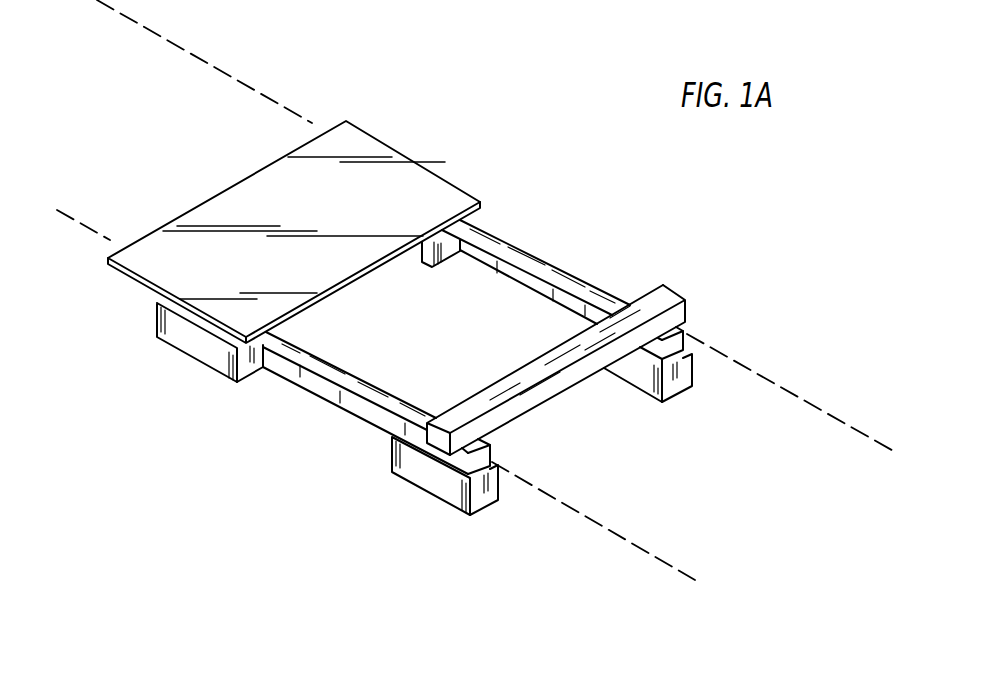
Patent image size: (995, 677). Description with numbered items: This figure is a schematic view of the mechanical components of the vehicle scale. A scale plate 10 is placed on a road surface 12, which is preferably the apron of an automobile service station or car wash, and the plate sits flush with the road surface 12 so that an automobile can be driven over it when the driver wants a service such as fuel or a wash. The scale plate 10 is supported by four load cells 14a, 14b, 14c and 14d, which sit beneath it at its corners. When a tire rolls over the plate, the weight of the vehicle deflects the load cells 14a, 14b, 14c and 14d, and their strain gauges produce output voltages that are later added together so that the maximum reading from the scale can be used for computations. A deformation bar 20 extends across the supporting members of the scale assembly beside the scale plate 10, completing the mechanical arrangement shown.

The scale plate 10 is at (257, 202).
The road surface 12 is at (153, 140).
The load cell 14a is at (210, 356).
The load cell 14b is at (452, 256).
The load cell 14c is at (421, 481).
The load cell 14d is at (629, 375).
The deformation bar 20 is at (667, 292).